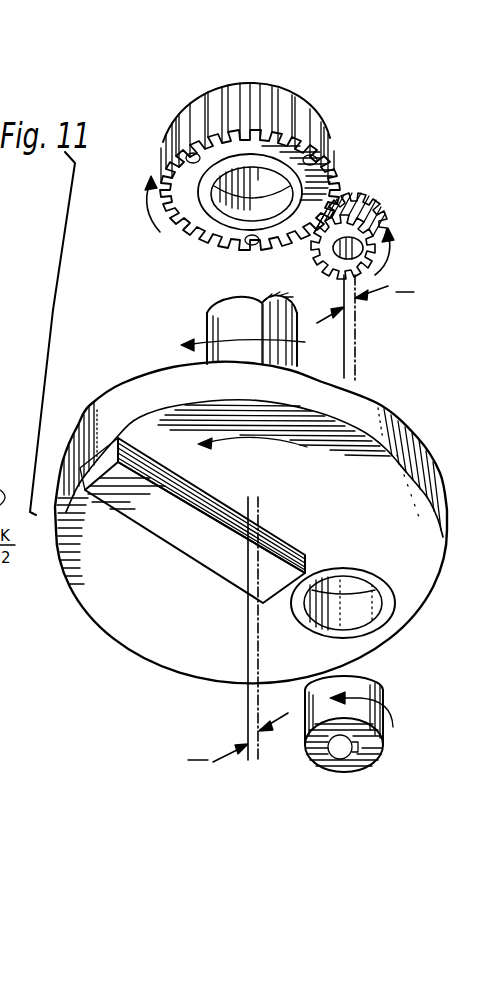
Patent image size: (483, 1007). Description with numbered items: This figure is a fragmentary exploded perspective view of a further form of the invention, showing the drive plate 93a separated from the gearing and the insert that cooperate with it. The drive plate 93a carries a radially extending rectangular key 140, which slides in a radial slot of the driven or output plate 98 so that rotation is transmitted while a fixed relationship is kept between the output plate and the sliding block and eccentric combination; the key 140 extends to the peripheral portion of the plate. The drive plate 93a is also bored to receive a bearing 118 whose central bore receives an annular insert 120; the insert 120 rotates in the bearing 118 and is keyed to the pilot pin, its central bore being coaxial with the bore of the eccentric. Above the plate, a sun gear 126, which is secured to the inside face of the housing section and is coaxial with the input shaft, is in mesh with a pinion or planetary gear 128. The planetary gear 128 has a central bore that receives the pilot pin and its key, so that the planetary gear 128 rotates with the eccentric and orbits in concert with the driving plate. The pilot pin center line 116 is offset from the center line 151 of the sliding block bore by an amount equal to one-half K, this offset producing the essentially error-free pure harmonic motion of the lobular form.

The drive plate 93a is at (100, 402).
The output plate 98 is at (207, 312).
The center line 116 is at (298, 344).
The bearing 118 is at (388, 618).
The insert 120 is at (383, 755).
The sun gear 126 is at (322, 124).
The planetary gear 128 is at (376, 213).
The rectangular key 140 is at (157, 516).
The center line 151 is at (355, 356).